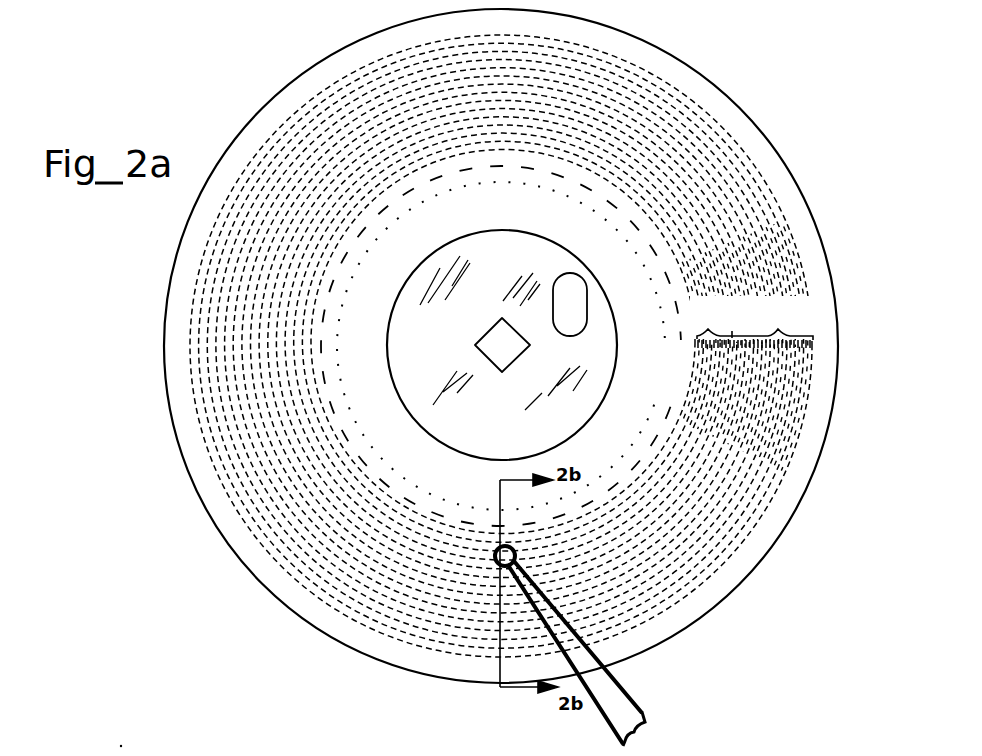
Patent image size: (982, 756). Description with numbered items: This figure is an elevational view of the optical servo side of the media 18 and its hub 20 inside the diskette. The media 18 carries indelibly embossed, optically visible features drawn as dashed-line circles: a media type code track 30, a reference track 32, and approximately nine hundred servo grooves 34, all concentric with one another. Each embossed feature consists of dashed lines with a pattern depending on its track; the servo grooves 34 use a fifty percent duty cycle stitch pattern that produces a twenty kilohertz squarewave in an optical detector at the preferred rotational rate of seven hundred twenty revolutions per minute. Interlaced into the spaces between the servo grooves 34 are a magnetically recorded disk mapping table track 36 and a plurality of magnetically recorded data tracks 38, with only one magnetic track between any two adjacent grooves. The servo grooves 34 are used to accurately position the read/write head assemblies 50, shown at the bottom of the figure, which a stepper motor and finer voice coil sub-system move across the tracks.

The media 18 is at (724, 92).
The hub 20 is at (500, 418).
The media type code (MTC) track 30 is at (662, 310).
The reference track 32 is at (425, 183).
The servo grooves 34 is at (732, 563).
The disk mapping table (DMT) track 36 is at (715, 325).
The data tracks 38 is at (772, 325).
The read/write head assemblies 50 is at (639, 709).